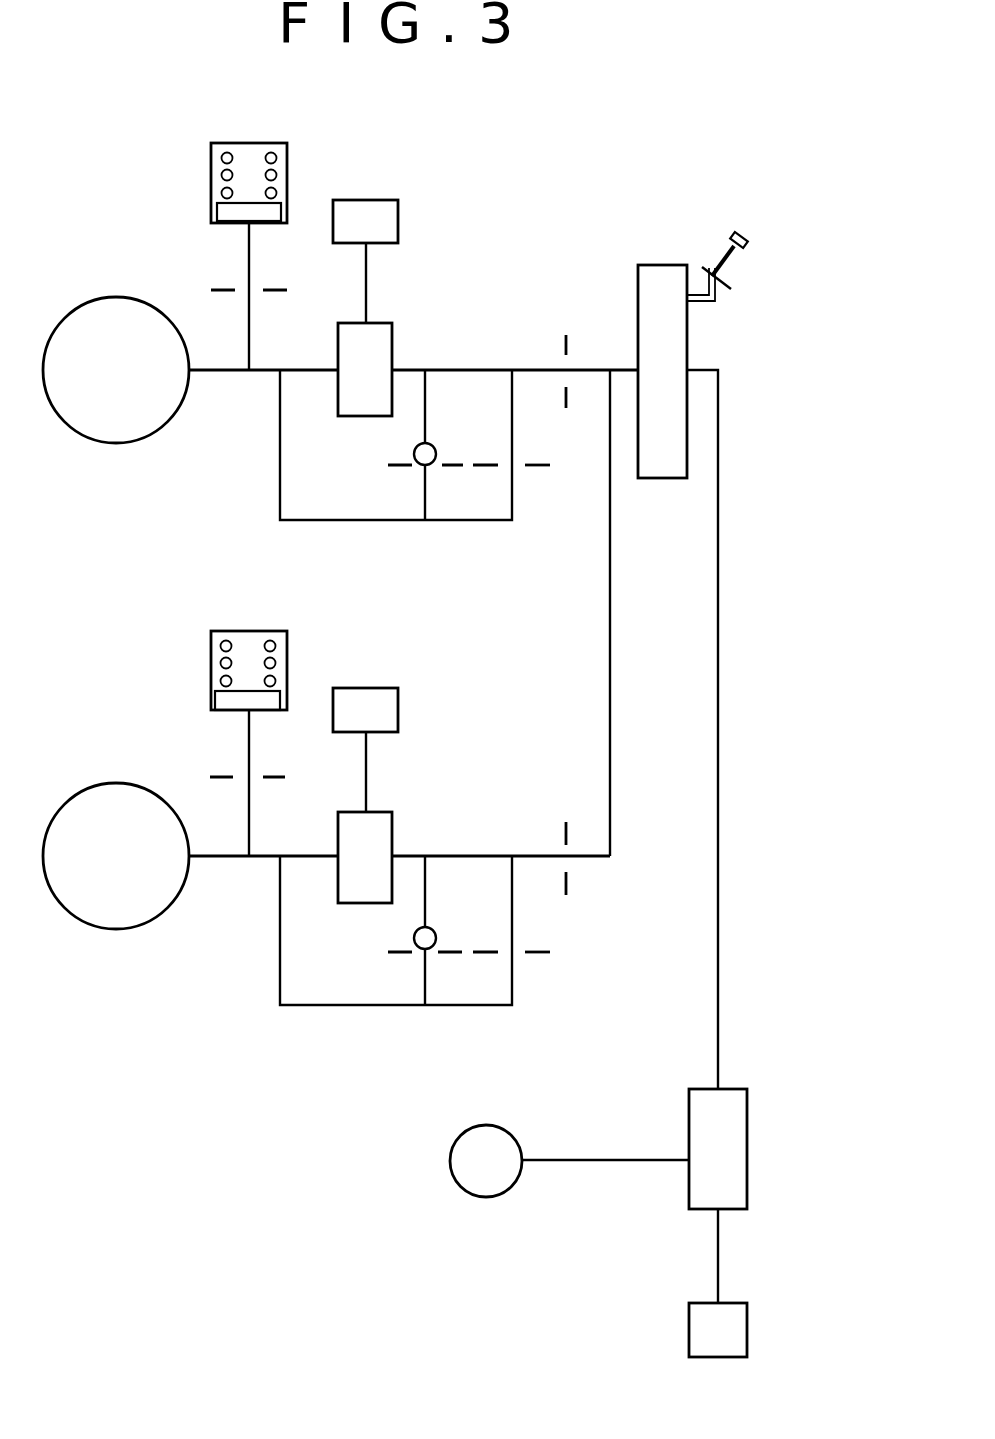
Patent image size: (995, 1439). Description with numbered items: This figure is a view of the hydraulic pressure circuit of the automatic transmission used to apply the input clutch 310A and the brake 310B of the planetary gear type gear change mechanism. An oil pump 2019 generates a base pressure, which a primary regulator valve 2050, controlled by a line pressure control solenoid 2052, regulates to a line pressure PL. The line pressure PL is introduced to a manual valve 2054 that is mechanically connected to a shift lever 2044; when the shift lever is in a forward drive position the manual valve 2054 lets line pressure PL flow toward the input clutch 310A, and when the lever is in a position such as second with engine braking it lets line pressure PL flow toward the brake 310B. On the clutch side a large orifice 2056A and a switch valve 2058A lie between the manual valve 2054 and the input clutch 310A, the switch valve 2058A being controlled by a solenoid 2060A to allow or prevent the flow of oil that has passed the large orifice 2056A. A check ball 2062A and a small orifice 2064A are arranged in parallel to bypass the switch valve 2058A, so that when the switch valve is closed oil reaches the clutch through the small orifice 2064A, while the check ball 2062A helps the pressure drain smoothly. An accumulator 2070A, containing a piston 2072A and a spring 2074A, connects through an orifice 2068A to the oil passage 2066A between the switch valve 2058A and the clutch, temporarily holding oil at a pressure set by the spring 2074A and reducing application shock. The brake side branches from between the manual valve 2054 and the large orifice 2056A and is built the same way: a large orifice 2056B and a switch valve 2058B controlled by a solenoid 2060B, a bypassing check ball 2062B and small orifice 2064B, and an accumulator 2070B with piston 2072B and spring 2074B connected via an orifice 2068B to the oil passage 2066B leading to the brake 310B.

The input clutch (C1) 310A is at (85, 437).
The brake (B2) 310B is at (85, 924).
The oil passage 2066A is at (222, 372).
The oil passage 2066B is at (221, 858).
The accumulator 2070A is at (290, 113).
The accumulator 2070B is at (290, 600).
The spring 2074A is at (222, 175).
The spring 2074B is at (220, 662).
The piston 2072A is at (230, 217).
The piston 2072B is at (228, 705).
The orifice 2068A is at (227, 290).
The orifice 2068B is at (220, 777).
The solenoid 2060A is at (398, 172).
The solenoid 2060B is at (398, 660).
The switch valve 2058A is at (392, 340).
The switch valve 2058B is at (392, 826).
The large orifice 2056A is at (562, 347).
The large orifice 2056B is at (562, 835).
The check ball 2062A is at (420, 466).
The check ball 2062B is at (420, 953).
The small orifice 2064A is at (538, 466).
The small orifice 2064B is at (538, 953).
The manual valve 2054 is at (657, 265).
The shift lever 2044 is at (723, 253).
The line pressure PL is at (718, 533).
The primary regulator valve 2050 is at (703, 1089).
The oil pump 2019 is at (462, 1193).
The line pressure control solenoid 2052 is at (689, 1325).